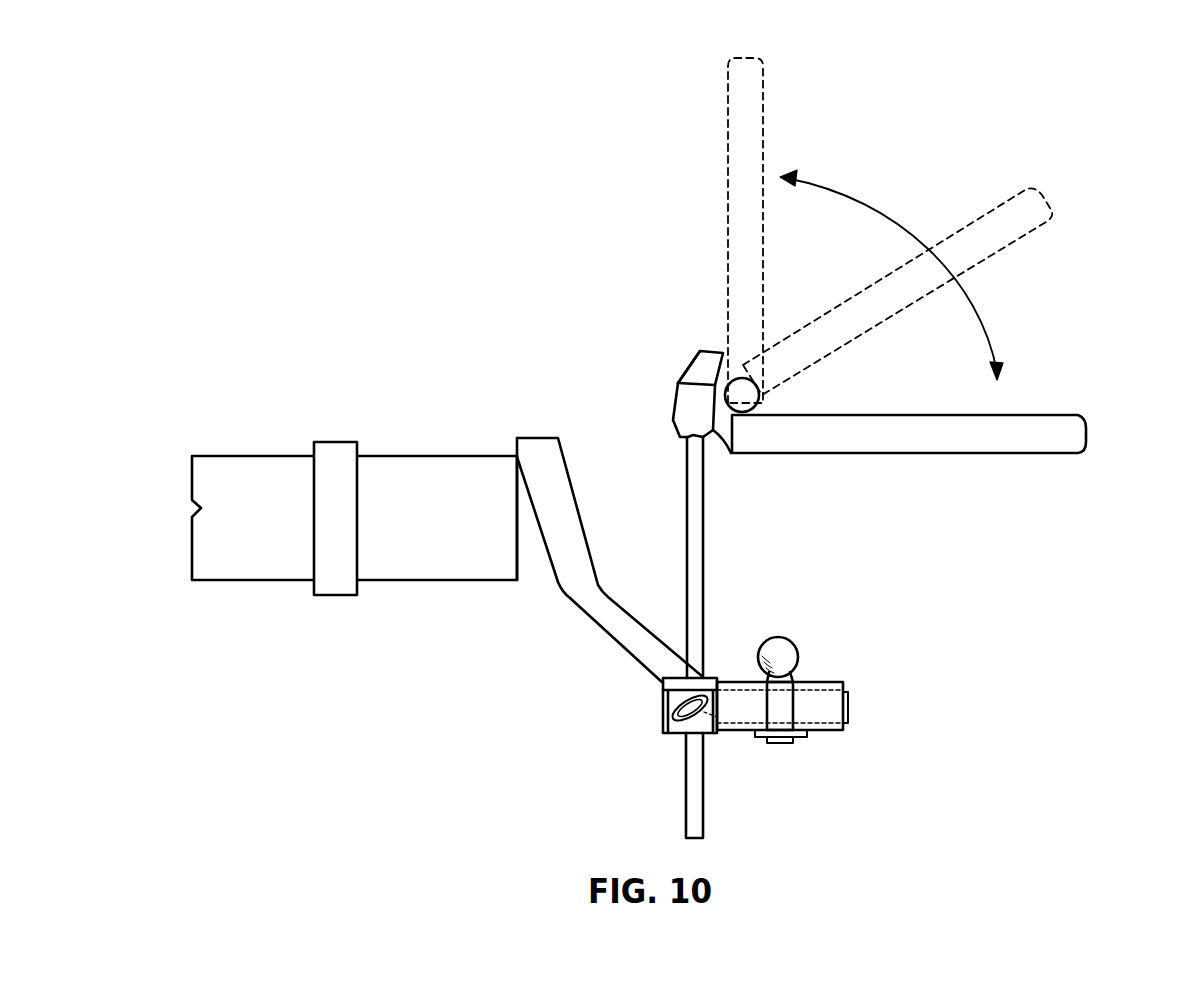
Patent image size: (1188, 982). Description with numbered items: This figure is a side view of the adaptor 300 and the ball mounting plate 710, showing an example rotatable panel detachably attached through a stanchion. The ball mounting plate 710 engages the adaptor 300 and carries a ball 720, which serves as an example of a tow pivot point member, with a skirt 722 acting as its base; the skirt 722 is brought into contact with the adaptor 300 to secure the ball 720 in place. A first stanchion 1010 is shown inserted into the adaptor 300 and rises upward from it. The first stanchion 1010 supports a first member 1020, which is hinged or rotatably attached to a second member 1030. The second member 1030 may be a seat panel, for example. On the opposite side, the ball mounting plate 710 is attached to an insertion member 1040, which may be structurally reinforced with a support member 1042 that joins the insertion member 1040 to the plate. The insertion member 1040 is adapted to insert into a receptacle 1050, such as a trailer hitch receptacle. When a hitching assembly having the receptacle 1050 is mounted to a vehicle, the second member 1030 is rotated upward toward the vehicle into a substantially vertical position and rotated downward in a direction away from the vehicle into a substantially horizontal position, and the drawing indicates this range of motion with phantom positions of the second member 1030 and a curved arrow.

The adaptor 300 is at (818, 692).
The ball mounting plate 710 is at (628, 647).
The ball 720 is at (780, 653).
The skirt 722 is at (802, 672).
The first stanchion 1010 is at (707, 550).
The first member 1020 is at (690, 410).
The second member 1030 is at (928, 438).
The insertion member 1040 is at (448, 472).
The support member 1042 is at (540, 563).
The receptacle 1050 is at (257, 428).